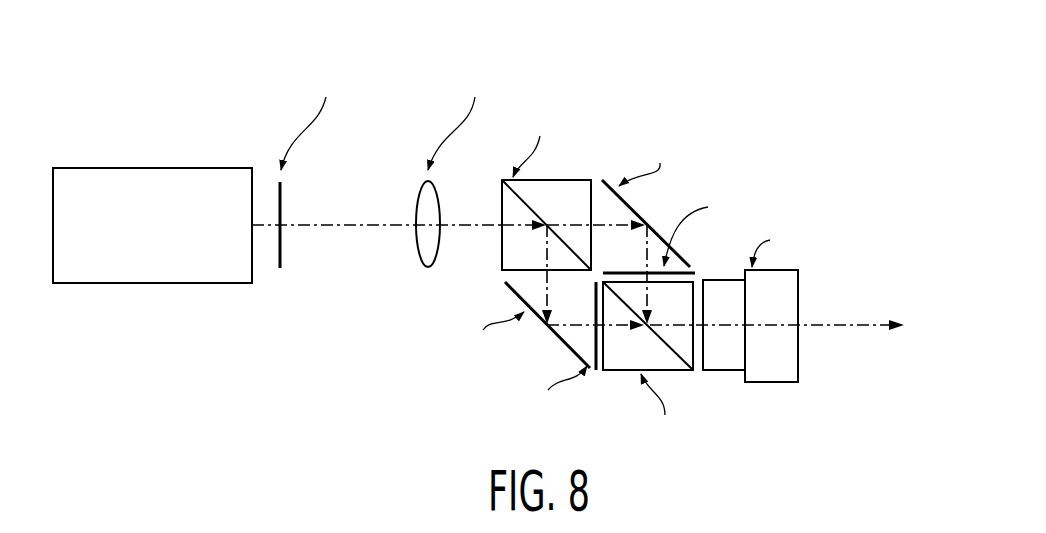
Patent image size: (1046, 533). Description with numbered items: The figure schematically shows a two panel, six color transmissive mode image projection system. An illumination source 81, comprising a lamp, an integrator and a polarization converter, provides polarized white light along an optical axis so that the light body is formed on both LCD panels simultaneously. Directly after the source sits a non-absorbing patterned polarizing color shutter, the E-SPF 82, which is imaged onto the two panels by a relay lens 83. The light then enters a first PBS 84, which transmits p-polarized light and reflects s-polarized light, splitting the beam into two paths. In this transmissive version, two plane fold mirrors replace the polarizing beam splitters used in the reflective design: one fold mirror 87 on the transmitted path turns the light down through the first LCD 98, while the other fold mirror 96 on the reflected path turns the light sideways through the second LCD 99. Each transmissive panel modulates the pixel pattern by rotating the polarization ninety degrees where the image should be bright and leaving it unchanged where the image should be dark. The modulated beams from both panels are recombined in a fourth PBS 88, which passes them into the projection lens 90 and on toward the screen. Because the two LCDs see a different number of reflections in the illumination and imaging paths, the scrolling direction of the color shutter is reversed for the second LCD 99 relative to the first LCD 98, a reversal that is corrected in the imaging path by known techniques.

The illumination source 81 is at (148, 284).
The E-SPF 82 is at (279, 269).
The relay lens 83 is at (418, 252).
The first PBS 84 is at (556, 179).
The fold mirror 87 is at (641, 209).
The fourth PBS 88 is at (675, 372).
The projection lens 90 is at (770, 383).
The fold mirror 96 is at (558, 338).
The first LCD 98 is at (696, 272).
The second LCD 99 is at (597, 372).